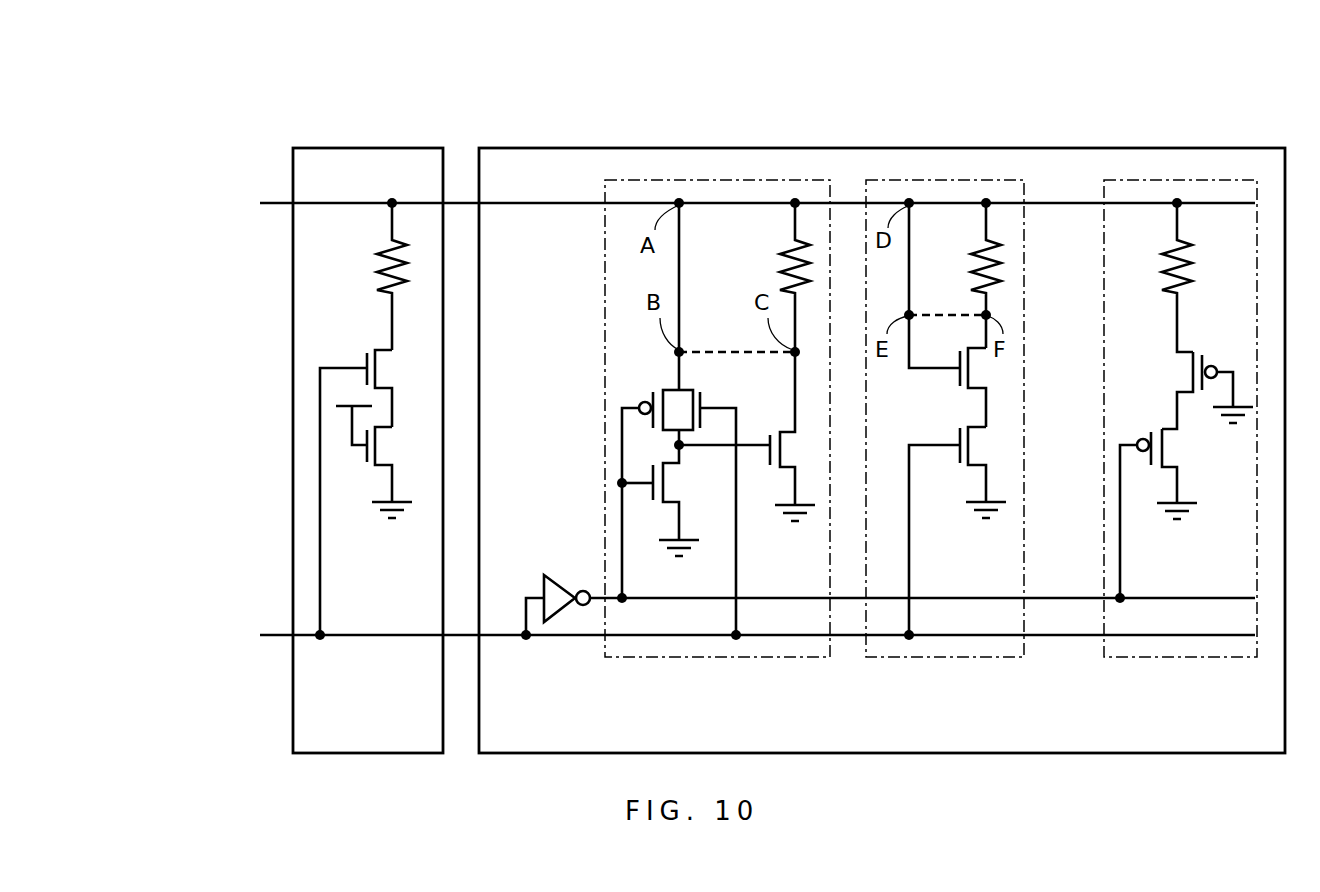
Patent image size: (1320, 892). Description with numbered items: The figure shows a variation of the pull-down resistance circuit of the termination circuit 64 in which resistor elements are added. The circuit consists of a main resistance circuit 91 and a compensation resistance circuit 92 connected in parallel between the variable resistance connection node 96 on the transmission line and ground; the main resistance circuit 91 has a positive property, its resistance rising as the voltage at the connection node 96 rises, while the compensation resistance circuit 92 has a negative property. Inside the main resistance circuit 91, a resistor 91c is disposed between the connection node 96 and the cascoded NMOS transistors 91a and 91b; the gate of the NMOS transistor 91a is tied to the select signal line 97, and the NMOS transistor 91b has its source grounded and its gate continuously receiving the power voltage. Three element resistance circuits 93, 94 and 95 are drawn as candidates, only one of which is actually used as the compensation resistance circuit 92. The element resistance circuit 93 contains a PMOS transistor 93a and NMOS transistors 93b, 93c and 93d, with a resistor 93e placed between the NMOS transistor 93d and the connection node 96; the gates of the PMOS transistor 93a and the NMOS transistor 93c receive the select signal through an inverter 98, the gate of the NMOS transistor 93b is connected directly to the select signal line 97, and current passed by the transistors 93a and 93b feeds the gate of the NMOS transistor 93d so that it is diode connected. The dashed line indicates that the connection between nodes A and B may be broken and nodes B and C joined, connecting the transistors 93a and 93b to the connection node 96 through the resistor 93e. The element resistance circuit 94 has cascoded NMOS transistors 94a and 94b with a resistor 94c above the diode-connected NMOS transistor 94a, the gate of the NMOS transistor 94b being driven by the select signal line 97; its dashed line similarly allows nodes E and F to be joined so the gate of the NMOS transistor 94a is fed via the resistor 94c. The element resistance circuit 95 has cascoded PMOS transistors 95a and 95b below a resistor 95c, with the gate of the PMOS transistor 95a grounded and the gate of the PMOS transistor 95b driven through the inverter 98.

The termination circuit 64 is at (1105, 117).
The main resistance circuit 91 is at (369, 147).
The NMOS transistor 91a is at (365, 360).
The NMOS transistor 91b is at (366, 462).
The resistor 91c is at (374, 267).
The compensation resistance circuit 92 is at (884, 147).
The element resistance circuit 93 is at (600, 410).
The PMOS transistor 93a is at (653, 396).
The NMOS transistor 93b is at (702, 398).
The NMOS transistor 93c is at (668, 480).
The NMOS transistor 93d is at (772, 472).
The resistor 93e is at (776, 267).
The element resistance circuit 94 is at (1030, 422).
The NMOS transistor 94a is at (957, 380).
The NMOS transistor 94b is at (958, 458).
The resistor 94c is at (968, 270).
The element resistance circuit 95 is at (1100, 418).
The PMOS transistor 95a is at (1204, 360).
The PMOS transistor 95b is at (1165, 445).
The resistor 95c is at (1160, 276).
The connection node 96 is at (272, 201).
The select signal line 97 is at (272, 633).
The inverter 98 is at (558, 576).